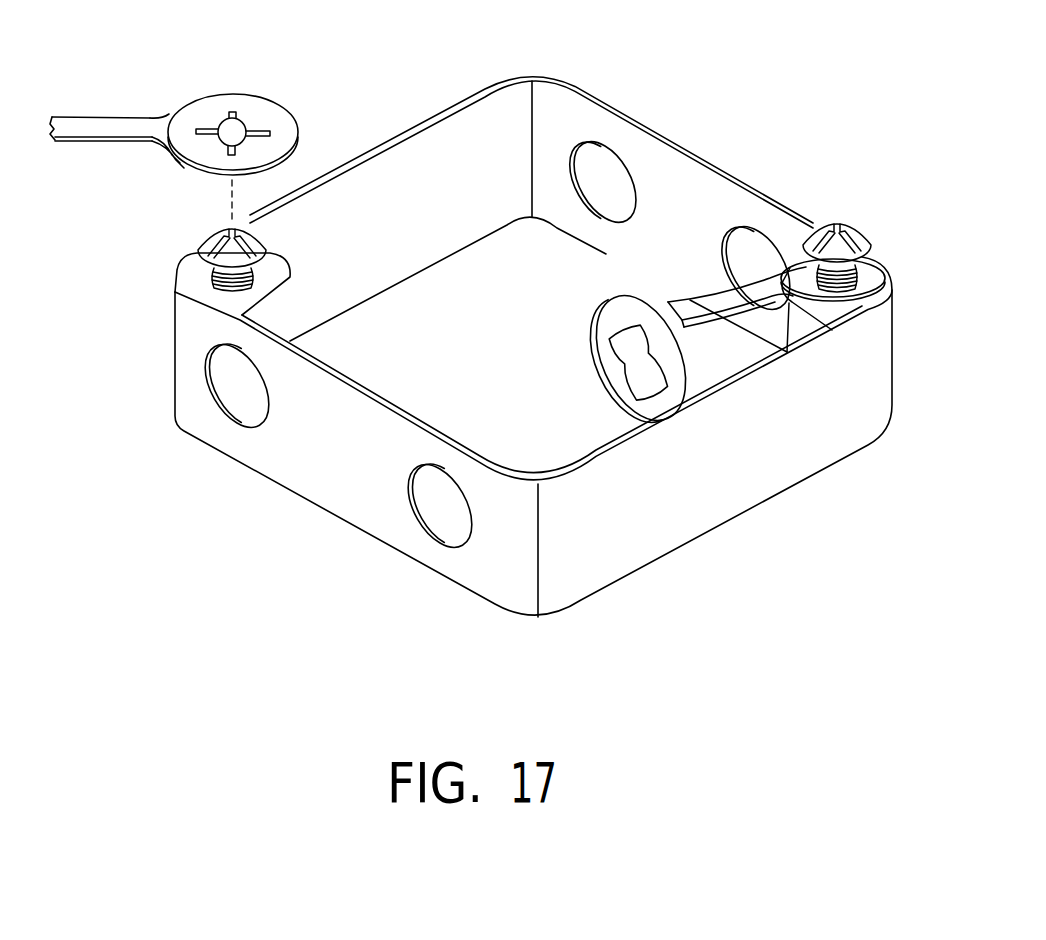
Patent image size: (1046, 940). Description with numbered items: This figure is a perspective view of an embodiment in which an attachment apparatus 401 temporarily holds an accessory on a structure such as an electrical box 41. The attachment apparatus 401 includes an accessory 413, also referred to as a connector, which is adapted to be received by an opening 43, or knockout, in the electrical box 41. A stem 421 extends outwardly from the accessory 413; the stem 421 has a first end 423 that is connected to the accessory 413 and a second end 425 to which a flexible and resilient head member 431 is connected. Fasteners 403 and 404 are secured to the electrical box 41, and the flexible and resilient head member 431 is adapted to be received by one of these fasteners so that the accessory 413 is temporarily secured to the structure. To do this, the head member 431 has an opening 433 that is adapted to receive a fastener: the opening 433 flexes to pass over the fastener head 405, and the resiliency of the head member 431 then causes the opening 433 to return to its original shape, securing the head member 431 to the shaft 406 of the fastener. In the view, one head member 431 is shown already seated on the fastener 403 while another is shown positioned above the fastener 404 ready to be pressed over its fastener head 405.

The electrical box 41 is at (333, 477).
The opening 43 is at (443, 545).
The attachment apparatus 401 is at (708, 263).
The fastener 403 is at (858, 240).
The fastener 404 is at (208, 237).
The fastener head 405 is at (256, 224).
The shaft 406 is at (286, 282).
The accessory 413 is at (602, 358).
The stem 421 is at (88, 124).
The first end 423 is at (153, 120).
The second end 425 is at (784, 360).
The flexible and resilient head member 431 is at (297, 112).
The opening 433 is at (223, 122).